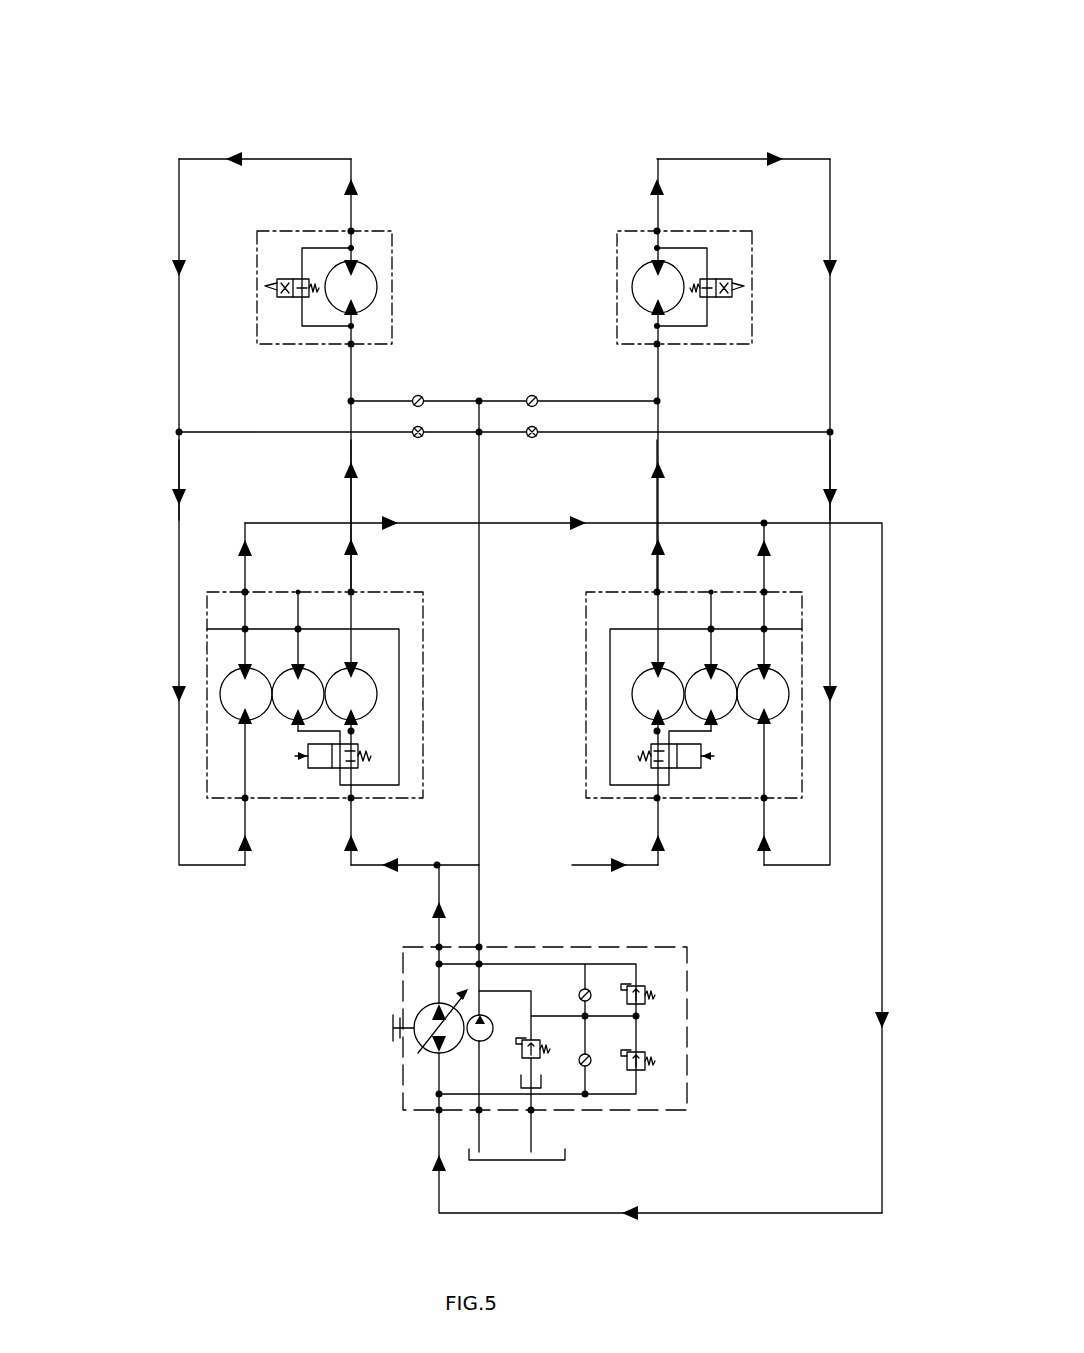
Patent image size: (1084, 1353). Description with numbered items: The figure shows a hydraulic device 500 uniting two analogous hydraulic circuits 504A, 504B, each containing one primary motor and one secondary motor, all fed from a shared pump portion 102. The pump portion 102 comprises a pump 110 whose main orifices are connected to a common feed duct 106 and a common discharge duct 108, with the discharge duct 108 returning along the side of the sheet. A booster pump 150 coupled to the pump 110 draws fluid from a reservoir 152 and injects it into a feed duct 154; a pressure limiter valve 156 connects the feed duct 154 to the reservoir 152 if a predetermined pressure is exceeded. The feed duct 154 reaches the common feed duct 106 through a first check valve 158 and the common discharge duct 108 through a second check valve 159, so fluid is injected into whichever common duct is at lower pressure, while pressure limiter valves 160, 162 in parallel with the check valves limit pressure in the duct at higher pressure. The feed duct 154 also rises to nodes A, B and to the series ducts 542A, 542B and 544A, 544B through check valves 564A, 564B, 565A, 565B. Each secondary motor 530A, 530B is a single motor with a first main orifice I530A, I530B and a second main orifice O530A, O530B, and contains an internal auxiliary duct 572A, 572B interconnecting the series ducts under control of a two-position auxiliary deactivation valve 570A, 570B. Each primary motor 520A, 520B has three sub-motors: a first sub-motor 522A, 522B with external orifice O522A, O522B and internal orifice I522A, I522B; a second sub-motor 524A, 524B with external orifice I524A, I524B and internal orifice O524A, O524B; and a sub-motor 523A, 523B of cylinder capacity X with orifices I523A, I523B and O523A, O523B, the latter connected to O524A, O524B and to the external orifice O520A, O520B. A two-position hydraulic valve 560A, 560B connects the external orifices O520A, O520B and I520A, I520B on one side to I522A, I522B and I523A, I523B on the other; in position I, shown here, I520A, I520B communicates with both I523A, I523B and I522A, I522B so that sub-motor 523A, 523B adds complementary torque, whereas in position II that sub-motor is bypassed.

The hydraulic device 500 is at (812, 86).
The circuit 504A is at (382, 128).
The circuit 504B is at (611, 128).
The secondary motor 530A is at (398, 260).
The secondary motor 530B is at (604, 290).
The auxiliary deactivation valve 570A is at (288, 278).
The auxiliary deactivation valve 570B is at (720, 278).
The internal auxiliary duct 572A is at (324, 326).
The internal auxiliary duct 572B is at (684, 326).
The second main orifice O530A is at (351, 231).
The second main orifice O530B is at (657, 231).
The first main orifice I530A is at (351, 344).
The first main orifice I530B is at (657, 344).
The check valve 564A is at (422, 396).
The check valve 564B is at (532, 395).
The check valve 565A is at (420, 438).
The check valve 565B is at (534, 438).
The series duct 544A is at (180, 482).
The series duct 544B is at (830, 459).
The series duct 542A is at (352, 490).
The series duct 542B is at (657, 490).
The primary motor 520A is at (207, 607).
The primary motor 520B is at (694, 711).
The first sub-motor 522A is at (372, 687).
The first sub-motor 522B is at (636, 687).
The sub-motor 523A is at (316, 673).
The sub-motor 523B is at (694, 673).
The second sub-motor 524A is at (221, 706).
The second sub-motor 524B is at (787, 706).
The external main orifice O520A is at (245, 592).
The external main orifice O520B is at (764, 592).
The first main orifice O522A is at (351, 592).
The first main orifice O522B is at (657, 592).
The main orifice O523A is at (298, 629).
The main orifice O523B is at (711, 629).
The fourth main orifice O524A is at (210, 630).
The fourth main orifice O524B is at (802, 630).
The external orifice I520A is at (351, 798).
The external orifice I520B is at (657, 798).
The third main orifice I522A is at (351, 731).
The third main orifice I522B is at (657, 731).
The second main orifice I523A is at (262, 761).
The second main orifice I523B is at (746, 761).
The second main orifice I524A is at (245, 798).
The second main orifice I524B is at (764, 798).
The hydraulic valve 560A is at (314, 768).
The hydraulic valve 560B is at (695, 768).
The junction A is at (437, 865).
The junction B is at (764, 523).
The feed duct 154 is at (479, 879).
The common feed duct 106 is at (439, 930).
The common discharge duct 108 is at (762, 1210).
The pump portion 102 is at (412, 1183).
The pump 110 is at (411, 1048).
The booster pump 150 is at (486, 1012).
The first check valve 158 is at (587, 988).
The second check valve 159 is at (590, 1064).
The pressure limiter valve 160 is at (647, 990).
The pressure limiter valve 162 is at (647, 1062).
The pressure limiter valve 156 is at (544, 1060).
The reservoir 152 is at (494, 1160).